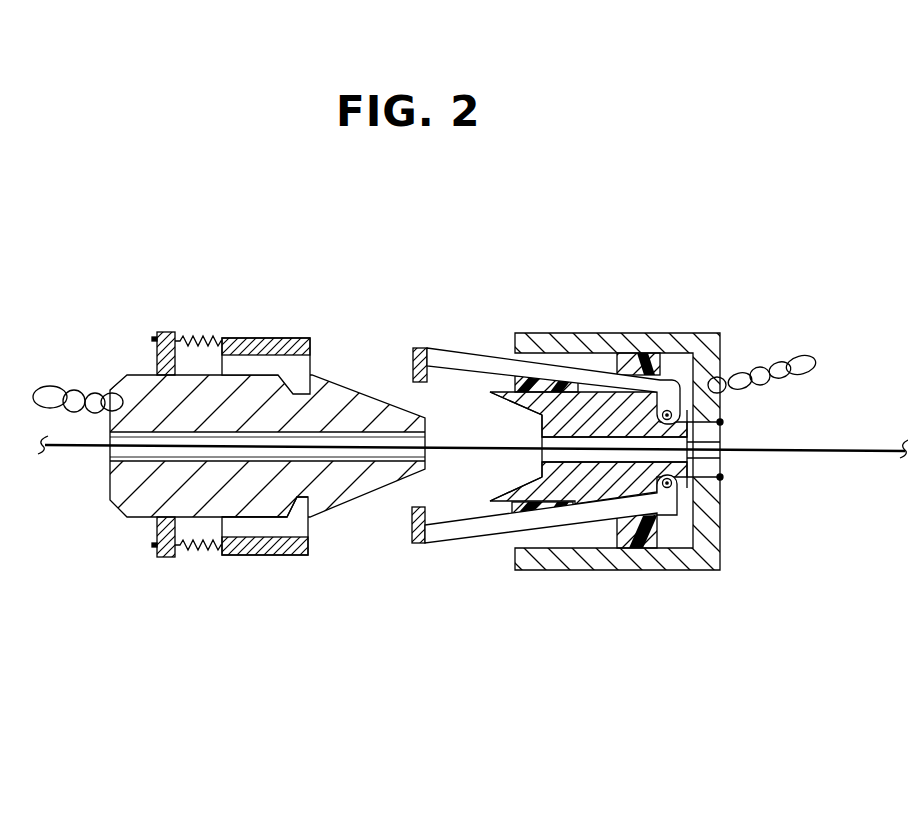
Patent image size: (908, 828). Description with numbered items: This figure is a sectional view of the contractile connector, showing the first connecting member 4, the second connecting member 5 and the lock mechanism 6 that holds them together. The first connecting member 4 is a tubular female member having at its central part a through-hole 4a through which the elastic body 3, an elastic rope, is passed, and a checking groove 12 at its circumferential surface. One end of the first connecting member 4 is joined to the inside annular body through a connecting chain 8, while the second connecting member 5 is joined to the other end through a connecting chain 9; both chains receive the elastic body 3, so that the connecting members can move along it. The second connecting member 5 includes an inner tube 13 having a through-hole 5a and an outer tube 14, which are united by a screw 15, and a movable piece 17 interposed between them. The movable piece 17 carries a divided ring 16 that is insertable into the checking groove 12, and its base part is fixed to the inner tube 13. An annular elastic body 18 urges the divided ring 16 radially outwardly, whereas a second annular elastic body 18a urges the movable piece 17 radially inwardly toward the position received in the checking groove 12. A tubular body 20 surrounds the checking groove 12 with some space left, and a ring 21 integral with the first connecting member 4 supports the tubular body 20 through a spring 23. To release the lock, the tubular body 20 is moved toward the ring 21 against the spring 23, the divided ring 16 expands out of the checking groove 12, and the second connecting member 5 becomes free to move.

The elastic body 3 is at (813, 450).
The first connecting member 4 is at (267, 344).
The through-hole 4a is at (350, 438).
The second connecting member 5 is at (470, 322).
The through-hole 5a is at (563, 442).
The lock mechanism 6 is at (272, 273).
The connecting chain 8 is at (76, 392).
The connecting chain 9 is at (778, 358).
The checking groove 12 is at (296, 512).
The inner tube 13 is at (566, 508).
The outer tube 14 is at (635, 563).
The screw 15 is at (722, 479).
The divided ring 16 is at (408, 545).
The movable piece 17 is at (452, 543).
The annular elastic body 18 is at (520, 518).
The second annular elastic body 18a is at (655, 540).
The tubular body 20 is at (285, 336).
The ring 21 is at (158, 331).
The spring 23 is at (207, 333).